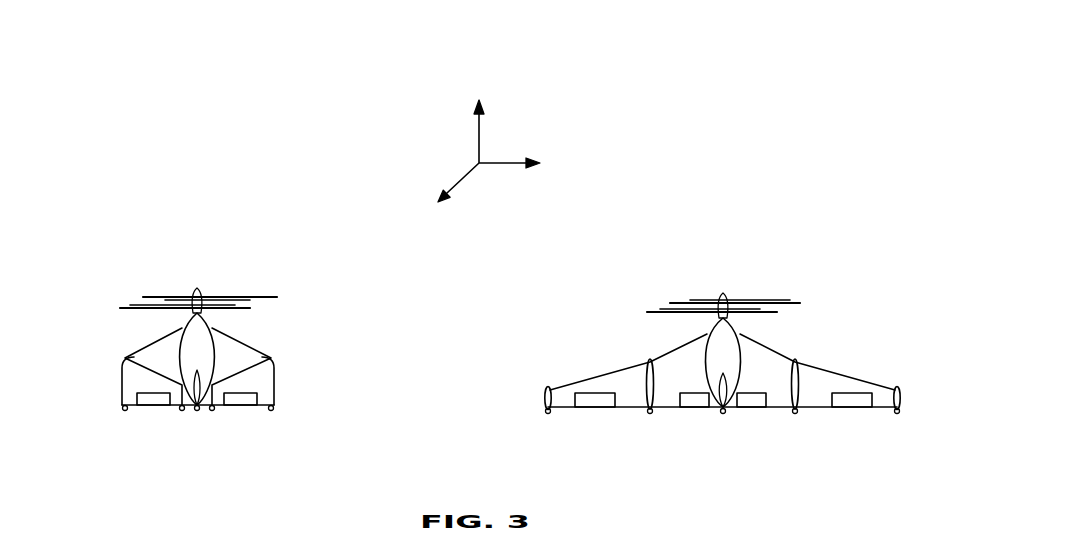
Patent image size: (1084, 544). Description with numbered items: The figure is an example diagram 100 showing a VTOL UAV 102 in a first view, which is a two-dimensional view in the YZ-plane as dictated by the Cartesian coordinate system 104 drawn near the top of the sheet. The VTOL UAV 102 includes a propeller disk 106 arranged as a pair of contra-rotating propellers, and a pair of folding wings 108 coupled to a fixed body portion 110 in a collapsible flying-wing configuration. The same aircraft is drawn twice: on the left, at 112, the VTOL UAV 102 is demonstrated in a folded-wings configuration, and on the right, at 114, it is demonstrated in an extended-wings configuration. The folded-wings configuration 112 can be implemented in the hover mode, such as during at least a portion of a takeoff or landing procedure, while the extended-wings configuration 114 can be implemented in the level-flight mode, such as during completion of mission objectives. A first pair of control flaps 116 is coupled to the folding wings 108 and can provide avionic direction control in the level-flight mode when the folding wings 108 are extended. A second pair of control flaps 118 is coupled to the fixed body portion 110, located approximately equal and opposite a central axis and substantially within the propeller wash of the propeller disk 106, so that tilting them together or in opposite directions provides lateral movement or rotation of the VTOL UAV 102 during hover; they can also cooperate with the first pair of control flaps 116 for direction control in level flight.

The example diagram 100 is at (152, 99).
The VTOL UAV 102 is at (197, 432).
The Cartesian coordinate system 104 is at (552, 80).
The propeller disk 106 is at (195, 290).
The folding wings 108 is at (143, 378).
The fixed body portion 110 is at (246, 345).
The folded-wings configuration 112 is at (338, 266).
The extended-wings configuration 114 is at (848, 265).
The first pair of control flaps 116 is at (155, 407).
The second pair of control flaps 118 is at (693, 410).